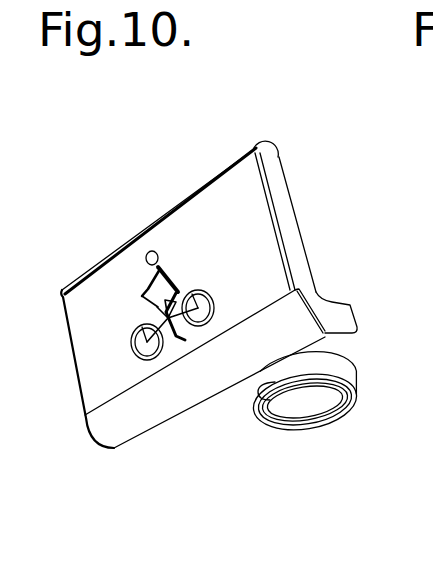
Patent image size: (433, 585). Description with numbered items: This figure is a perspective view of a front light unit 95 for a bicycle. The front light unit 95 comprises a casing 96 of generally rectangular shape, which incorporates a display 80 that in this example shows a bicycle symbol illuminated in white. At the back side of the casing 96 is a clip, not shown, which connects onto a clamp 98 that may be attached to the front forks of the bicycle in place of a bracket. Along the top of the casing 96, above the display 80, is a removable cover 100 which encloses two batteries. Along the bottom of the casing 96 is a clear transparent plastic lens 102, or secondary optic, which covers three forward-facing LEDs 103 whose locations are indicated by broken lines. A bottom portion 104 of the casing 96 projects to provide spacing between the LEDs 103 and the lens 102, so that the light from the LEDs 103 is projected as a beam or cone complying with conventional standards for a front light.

The display 80 is at (97, 362).
The front light unit 95 is at (186, 193).
The removable cover 100 is at (110, 256).
The casing 96 is at (291, 237).
The bottom portion 104 is at (350, 313).
The lens 102 is at (141, 402).
The forward-facing LEDs 103 is at (112, 427).
The clamp 98 is at (320, 411).